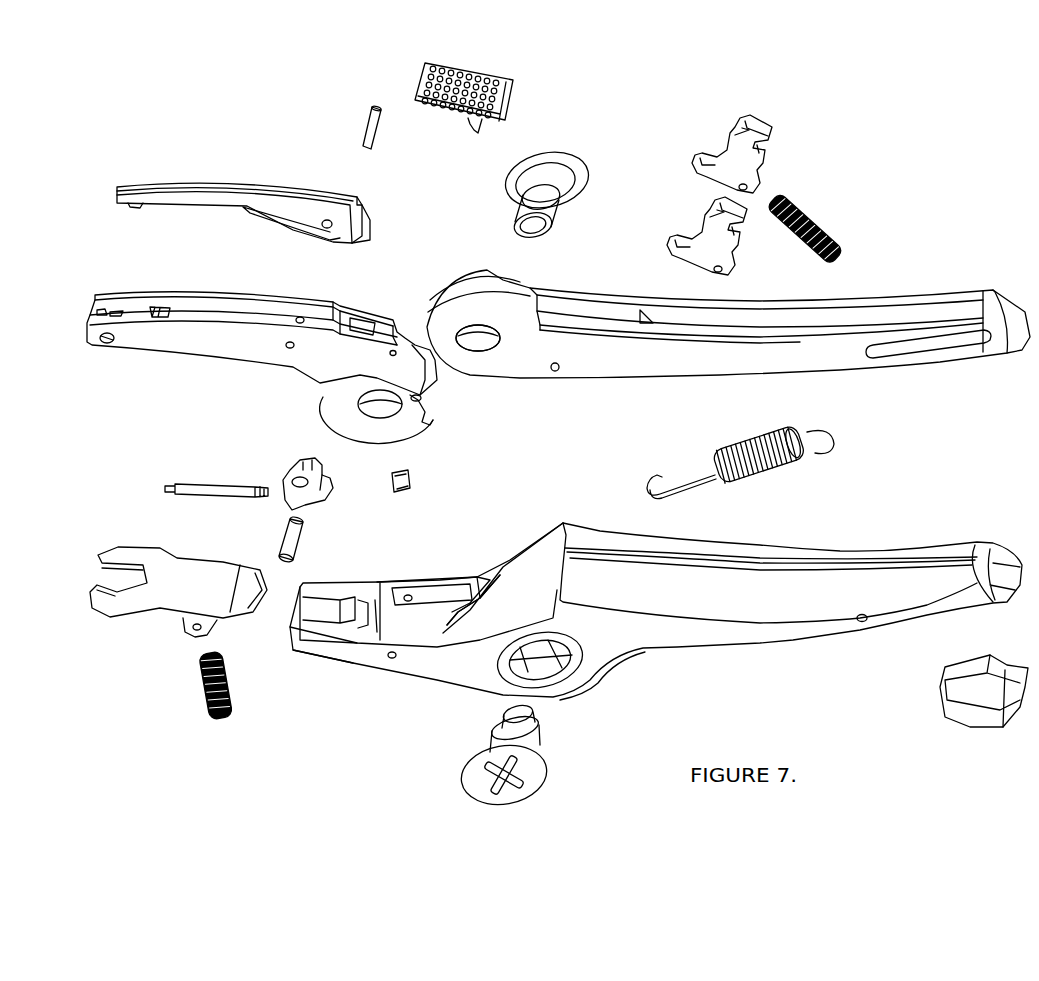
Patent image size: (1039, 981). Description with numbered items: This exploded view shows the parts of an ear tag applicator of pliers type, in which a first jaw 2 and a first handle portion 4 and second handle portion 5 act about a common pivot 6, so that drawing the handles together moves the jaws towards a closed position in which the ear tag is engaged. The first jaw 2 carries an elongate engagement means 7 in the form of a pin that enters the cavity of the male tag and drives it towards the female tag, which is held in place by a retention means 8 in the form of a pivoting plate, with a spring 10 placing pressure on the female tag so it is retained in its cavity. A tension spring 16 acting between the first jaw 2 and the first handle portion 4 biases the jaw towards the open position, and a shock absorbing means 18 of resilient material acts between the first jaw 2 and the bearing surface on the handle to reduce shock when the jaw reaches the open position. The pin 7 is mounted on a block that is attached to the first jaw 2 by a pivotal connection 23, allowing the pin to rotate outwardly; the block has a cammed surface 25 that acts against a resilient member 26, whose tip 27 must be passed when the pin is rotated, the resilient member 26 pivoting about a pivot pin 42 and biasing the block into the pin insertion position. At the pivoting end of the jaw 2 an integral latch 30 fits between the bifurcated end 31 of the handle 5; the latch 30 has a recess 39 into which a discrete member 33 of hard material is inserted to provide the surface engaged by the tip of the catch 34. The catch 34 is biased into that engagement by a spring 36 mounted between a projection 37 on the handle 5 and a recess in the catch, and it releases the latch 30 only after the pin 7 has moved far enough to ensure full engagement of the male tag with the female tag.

The first jaw 2 is at (150, 340).
The first handle portion 4 is at (932, 580).
The second handle portion 5 is at (833, 360).
The common pivot 6 is at (568, 157).
The elongate engagement means 7 is at (210, 490).
The retention means 8 is at (185, 585).
The spring 10 is at (232, 713).
The tension spring 16 is at (823, 460).
The shock absorbing means 18 is at (480, 73).
The pivotal connection 23 is at (300, 538).
The cammed surface 25 is at (293, 463).
The resilient member 26 is at (193, 186).
The tip 27 is at (128, 205).
The integral latch 30 is at (360, 413).
The bifurcated end 31 is at (523, 370).
The discrete member 33 is at (410, 475).
The catch 34 is at (715, 242).
The spring 36 is at (797, 205).
The projection 37 is at (453, 607).
The recess 39 is at (440, 405).
The pivot pin 42 is at (384, 136).